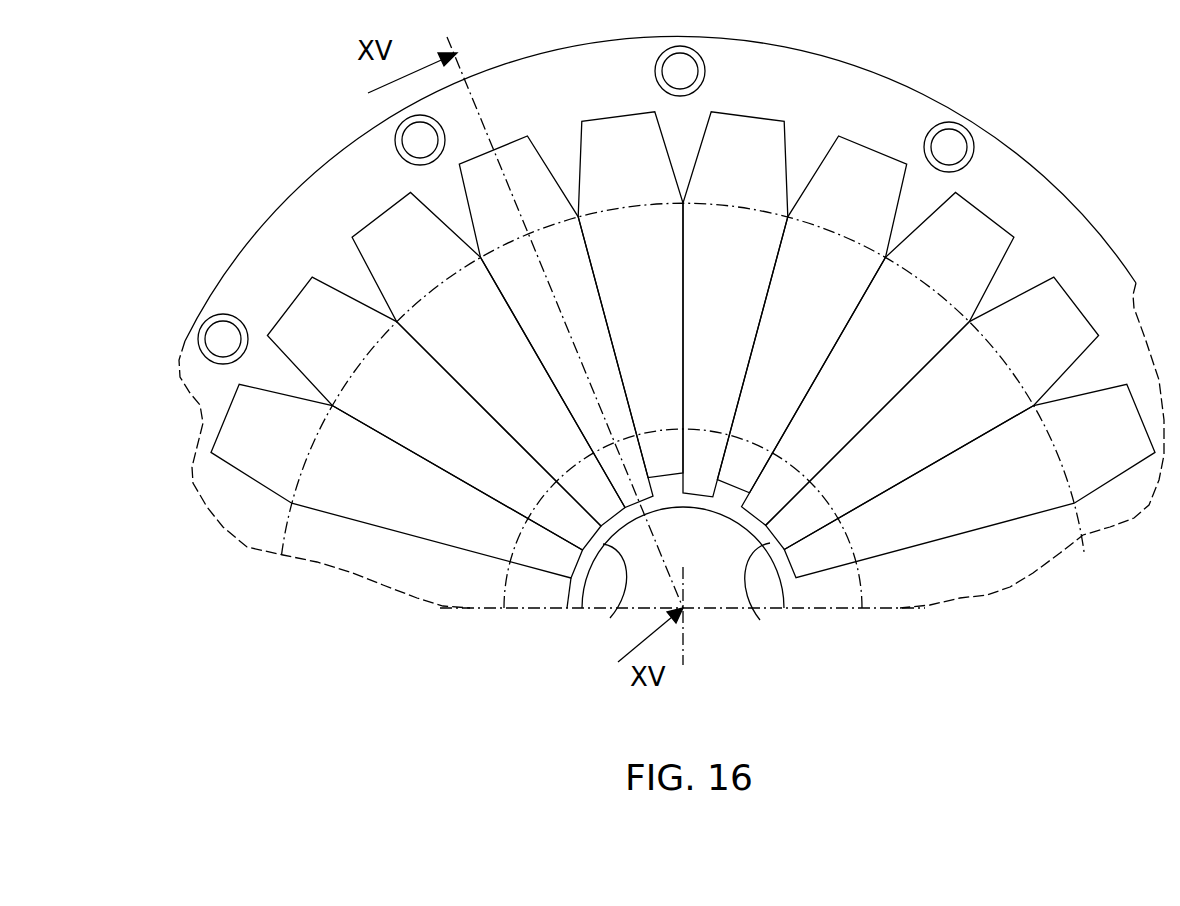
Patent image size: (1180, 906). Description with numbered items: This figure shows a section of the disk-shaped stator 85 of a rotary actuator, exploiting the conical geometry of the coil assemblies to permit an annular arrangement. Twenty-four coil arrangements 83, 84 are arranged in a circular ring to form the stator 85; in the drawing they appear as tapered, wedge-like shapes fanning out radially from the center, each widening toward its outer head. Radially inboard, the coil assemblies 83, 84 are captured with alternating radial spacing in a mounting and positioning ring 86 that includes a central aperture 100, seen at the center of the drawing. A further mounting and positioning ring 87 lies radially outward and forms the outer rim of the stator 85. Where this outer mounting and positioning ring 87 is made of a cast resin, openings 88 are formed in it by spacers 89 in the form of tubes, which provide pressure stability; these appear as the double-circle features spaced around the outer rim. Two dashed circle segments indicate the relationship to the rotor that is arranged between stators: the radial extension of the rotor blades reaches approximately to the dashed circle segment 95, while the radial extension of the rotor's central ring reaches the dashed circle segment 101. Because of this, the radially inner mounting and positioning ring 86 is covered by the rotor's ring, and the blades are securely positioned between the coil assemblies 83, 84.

The coil arrangement 83 is at (362, 493).
The coil arrangement 84 is at (520, 482).
The stator 85 is at (221, 270).
The mounting and positioning ring 86 is at (760, 620).
The mounting and positioning ring 87 is at (310, 200).
The opening 88 is at (975, 143).
The spacer 89 is at (943, 140).
The dashed circle segment 95 is at (1080, 536).
The central aperture 100 is at (610, 618).
The dashed circle segment 101 is at (860, 612).